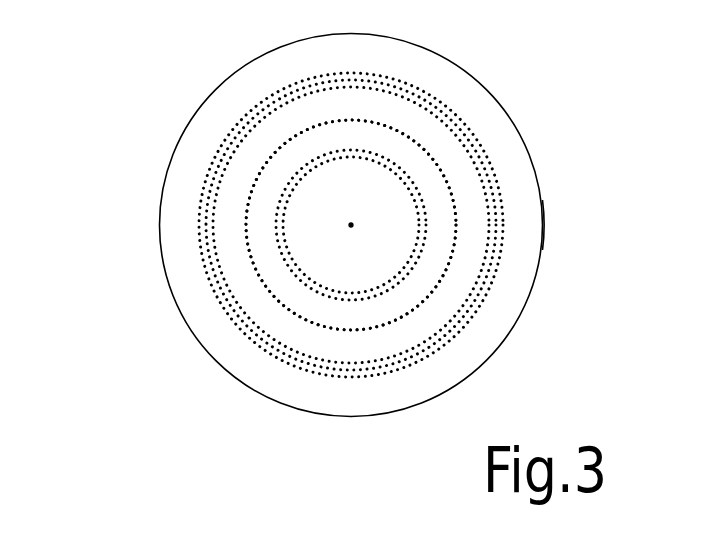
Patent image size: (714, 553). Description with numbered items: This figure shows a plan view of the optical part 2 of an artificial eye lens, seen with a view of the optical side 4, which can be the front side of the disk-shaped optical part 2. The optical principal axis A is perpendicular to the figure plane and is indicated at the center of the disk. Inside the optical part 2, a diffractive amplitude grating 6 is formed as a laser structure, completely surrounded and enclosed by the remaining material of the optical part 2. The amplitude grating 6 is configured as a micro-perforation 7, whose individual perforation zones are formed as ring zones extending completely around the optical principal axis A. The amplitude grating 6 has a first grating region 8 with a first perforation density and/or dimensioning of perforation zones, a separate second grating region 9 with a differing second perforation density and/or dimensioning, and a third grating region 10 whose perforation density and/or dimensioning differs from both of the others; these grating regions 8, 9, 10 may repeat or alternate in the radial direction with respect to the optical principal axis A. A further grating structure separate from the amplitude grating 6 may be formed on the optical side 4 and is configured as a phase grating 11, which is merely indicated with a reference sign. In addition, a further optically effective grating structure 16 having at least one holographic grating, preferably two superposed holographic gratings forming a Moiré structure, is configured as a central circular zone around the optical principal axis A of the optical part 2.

The optical part 2 is at (562, 122).
The optical side 4 is at (527, 224).
The amplitude grating 6 is at (228, 339).
The micro-perforation 7 is at (308, 153).
The first grating region 8 is at (450, 342).
The second grating region 9 is at (392, 323).
The third grating region 10 is at (427, 233).
The phase grating 11 is at (523, 184).
The optical grating structure 16 is at (298, 243).
The optical principal axis A is at (351, 225).